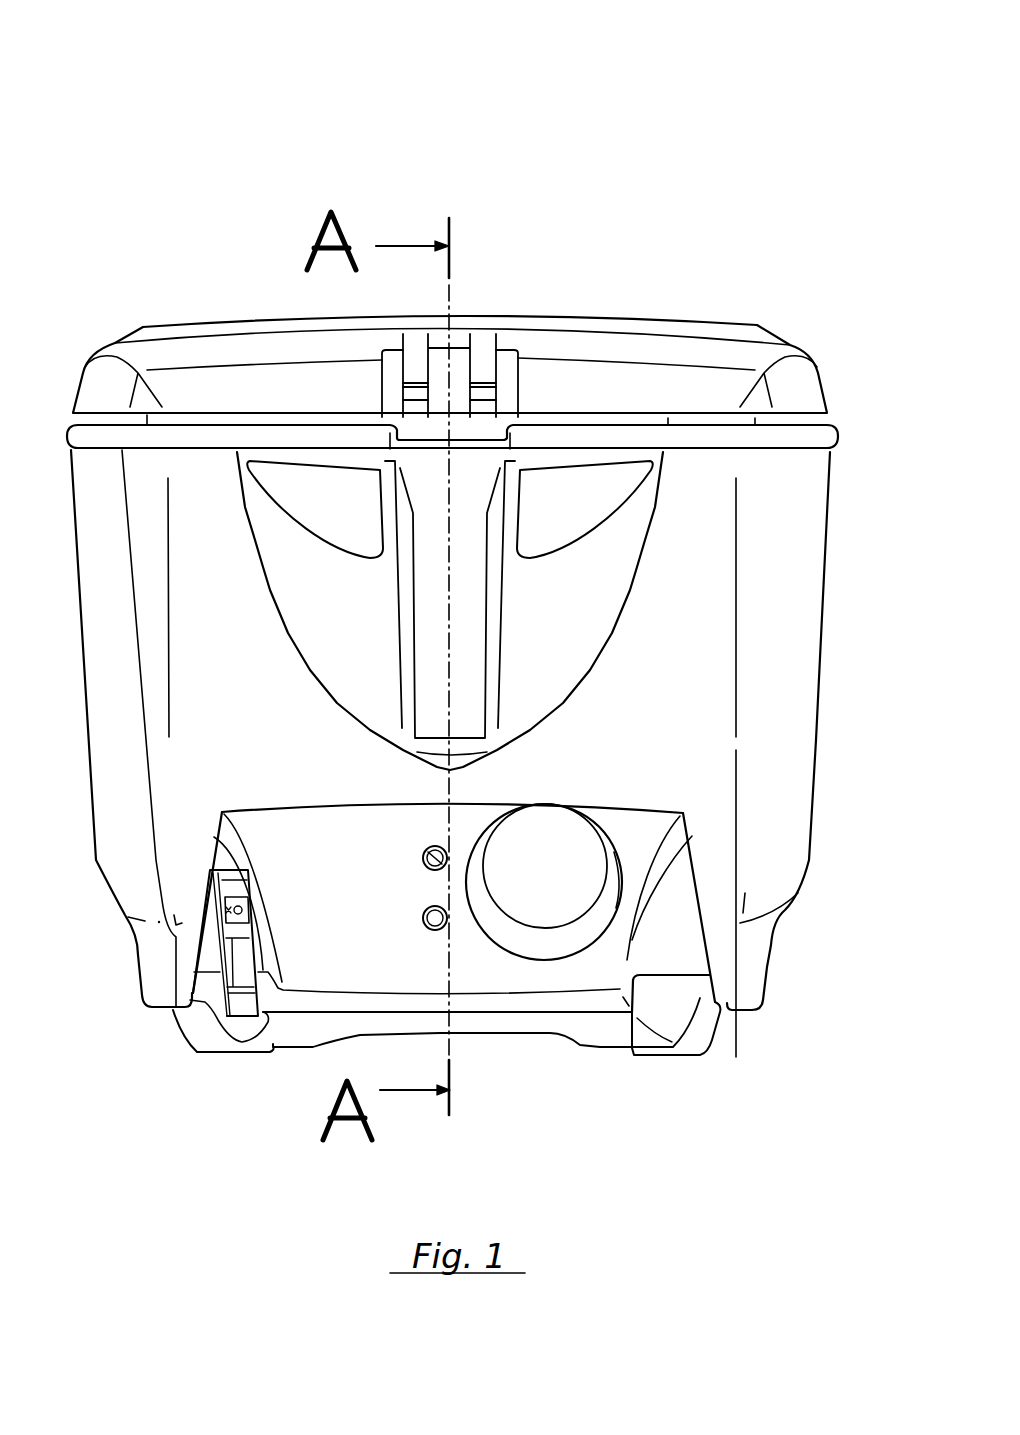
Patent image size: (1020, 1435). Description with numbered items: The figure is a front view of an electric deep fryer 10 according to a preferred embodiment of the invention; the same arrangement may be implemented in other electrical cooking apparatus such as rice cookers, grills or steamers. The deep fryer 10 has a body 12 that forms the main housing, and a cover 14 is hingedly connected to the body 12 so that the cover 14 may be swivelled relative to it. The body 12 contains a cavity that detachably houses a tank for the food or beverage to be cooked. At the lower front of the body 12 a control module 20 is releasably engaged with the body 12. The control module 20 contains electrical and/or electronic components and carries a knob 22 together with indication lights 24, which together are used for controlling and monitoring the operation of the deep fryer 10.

The deep fryer 10 is at (666, 168).
The body 12 is at (828, 560).
The cover 14 is at (737, 321).
The control module 20 is at (592, 1027).
The knob 22 is at (547, 910).
The indication lights 24 is at (422, 857).